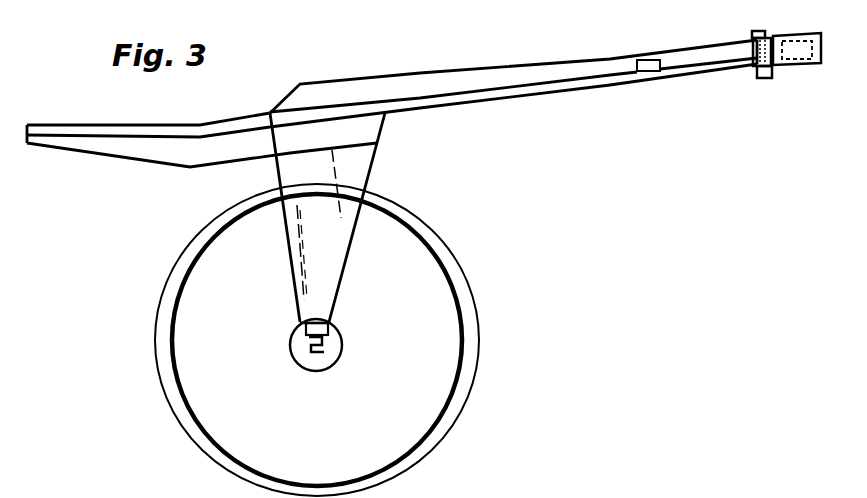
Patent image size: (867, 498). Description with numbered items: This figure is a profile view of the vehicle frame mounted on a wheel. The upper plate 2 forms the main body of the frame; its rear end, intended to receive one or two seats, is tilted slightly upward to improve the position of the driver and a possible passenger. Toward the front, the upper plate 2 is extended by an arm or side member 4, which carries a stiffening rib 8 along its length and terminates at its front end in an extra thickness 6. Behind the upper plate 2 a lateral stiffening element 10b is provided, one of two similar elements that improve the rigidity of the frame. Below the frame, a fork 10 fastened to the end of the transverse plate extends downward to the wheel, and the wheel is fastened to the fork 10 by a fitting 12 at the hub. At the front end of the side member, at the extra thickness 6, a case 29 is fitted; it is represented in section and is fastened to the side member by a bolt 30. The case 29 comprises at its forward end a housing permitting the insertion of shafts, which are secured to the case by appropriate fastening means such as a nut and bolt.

The upper plate 2 is at (60, 136).
The side member 4 is at (540, 93).
The extra thickness 6 is at (693, 68).
The stiffening rib 8 is at (478, 85).
The fork 10 is at (360, 172).
The lateral stiffening element 10b is at (120, 152).
The fitting 12 is at (300, 333).
The case 29 is at (796, 70).
The bolt 30 is at (765, 74).